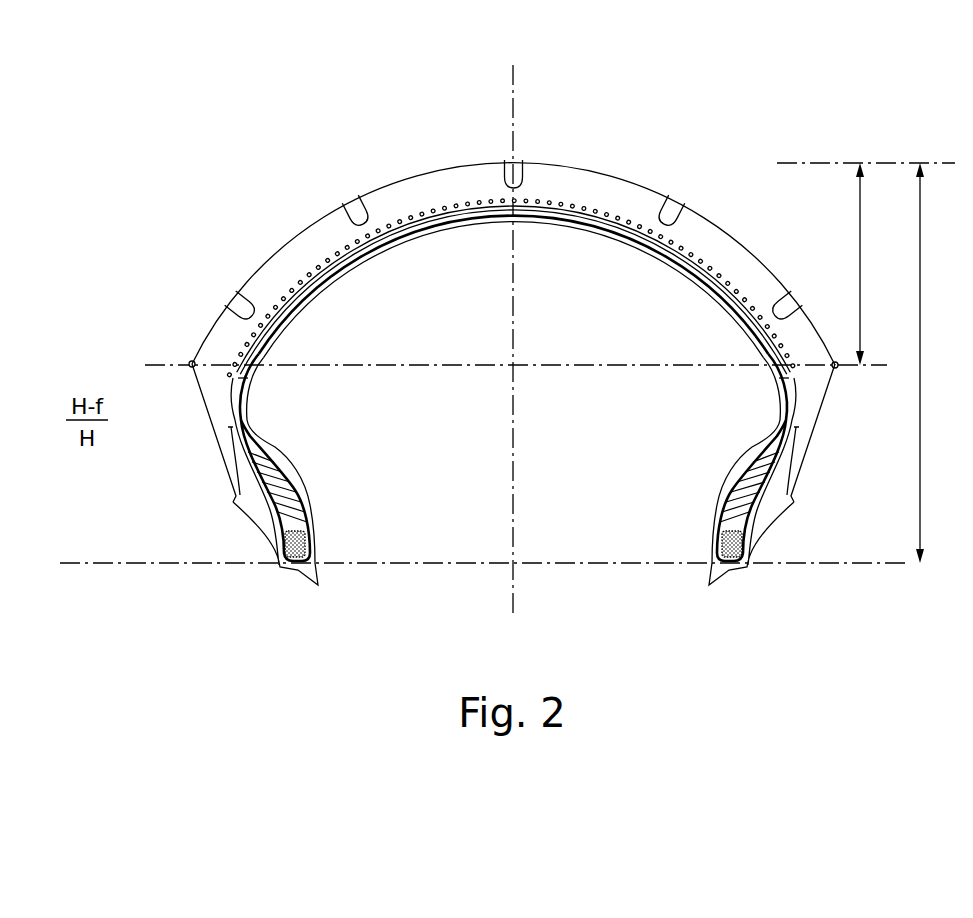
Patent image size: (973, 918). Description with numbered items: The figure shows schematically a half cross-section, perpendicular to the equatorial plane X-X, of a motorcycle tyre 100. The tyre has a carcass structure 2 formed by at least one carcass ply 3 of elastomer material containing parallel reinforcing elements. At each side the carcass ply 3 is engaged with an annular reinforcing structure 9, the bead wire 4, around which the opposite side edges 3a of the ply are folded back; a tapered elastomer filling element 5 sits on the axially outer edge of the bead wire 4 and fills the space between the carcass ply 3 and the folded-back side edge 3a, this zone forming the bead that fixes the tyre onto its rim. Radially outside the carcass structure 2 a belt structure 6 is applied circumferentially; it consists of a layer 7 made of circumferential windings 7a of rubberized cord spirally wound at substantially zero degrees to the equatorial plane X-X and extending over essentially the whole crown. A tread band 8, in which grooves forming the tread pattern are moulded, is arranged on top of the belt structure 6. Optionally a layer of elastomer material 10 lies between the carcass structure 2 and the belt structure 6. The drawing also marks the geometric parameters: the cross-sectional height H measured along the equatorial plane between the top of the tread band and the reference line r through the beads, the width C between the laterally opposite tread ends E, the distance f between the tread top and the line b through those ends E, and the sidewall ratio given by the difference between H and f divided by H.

The motorcycle tyre 100 is at (722, 112).
The carcass structure 2 is at (805, 422).
The carcass ply 3 is at (680, 258).
The side edges of the carcass ply 3a is at (253, 490).
The bead wire 4 is at (297, 566).
The tapered elastomer filling element 5 is at (300, 507).
The belt structure 6 is at (236, 380).
The layer of the belt structure 7 is at (427, 208).
The circumferential windings 7a is at (585, 208).
The tread band 8 is at (697, 227).
The annular reinforcing structure 9 is at (270, 472).
The layer of elastomer material 10 is at (270, 335).
The equatorial plane X is at (512, 342).
The width C is at (468, 368).
The ends of the tread E is at (191, 363).
The tread edge line b is at (524, 370).
The reference line r is at (133, 566).
The distance between tread top and line through tread ends f is at (860, 263).
The cross-sectional height H is at (937, 363).